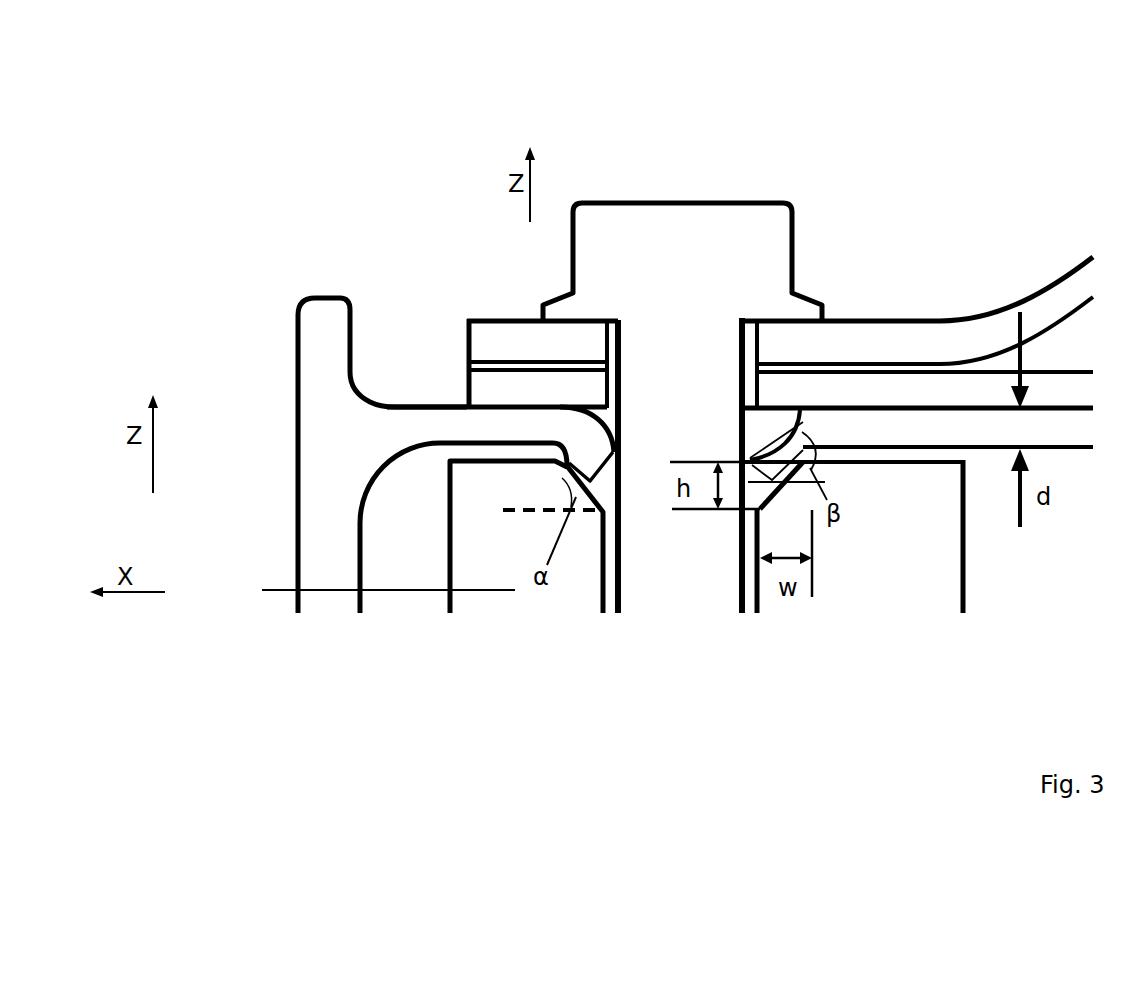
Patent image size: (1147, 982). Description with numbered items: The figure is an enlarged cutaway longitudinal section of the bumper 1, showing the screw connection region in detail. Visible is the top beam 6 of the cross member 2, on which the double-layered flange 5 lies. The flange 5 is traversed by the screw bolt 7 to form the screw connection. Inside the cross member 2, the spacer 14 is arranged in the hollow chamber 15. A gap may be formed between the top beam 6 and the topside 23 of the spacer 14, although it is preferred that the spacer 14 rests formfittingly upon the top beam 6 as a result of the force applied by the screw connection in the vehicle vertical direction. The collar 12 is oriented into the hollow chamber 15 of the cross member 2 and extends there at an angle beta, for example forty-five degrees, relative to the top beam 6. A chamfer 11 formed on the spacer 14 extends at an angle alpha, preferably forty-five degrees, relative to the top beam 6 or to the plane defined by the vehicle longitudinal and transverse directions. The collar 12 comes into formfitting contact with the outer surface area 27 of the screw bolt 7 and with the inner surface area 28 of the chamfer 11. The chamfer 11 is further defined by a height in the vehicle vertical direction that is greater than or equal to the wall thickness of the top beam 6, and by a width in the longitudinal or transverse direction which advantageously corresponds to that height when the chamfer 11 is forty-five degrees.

The bumper 1 is at (258, 185).
The cross member 2 is at (290, 404).
The double-layered flange 5 is at (866, 314).
The top beam 6 is at (431, 432).
The screw bolt 7 is at (691, 247).
The chamfer 11 is at (600, 488).
The collar 12 is at (568, 461).
The spacer 14 is at (1022, 609).
The hollow chamber 15 is at (1011, 571).
The topside 23 is at (515, 460).
The outer surface area 27 is at (596, 578).
The inner surface area 28 is at (620, 417).